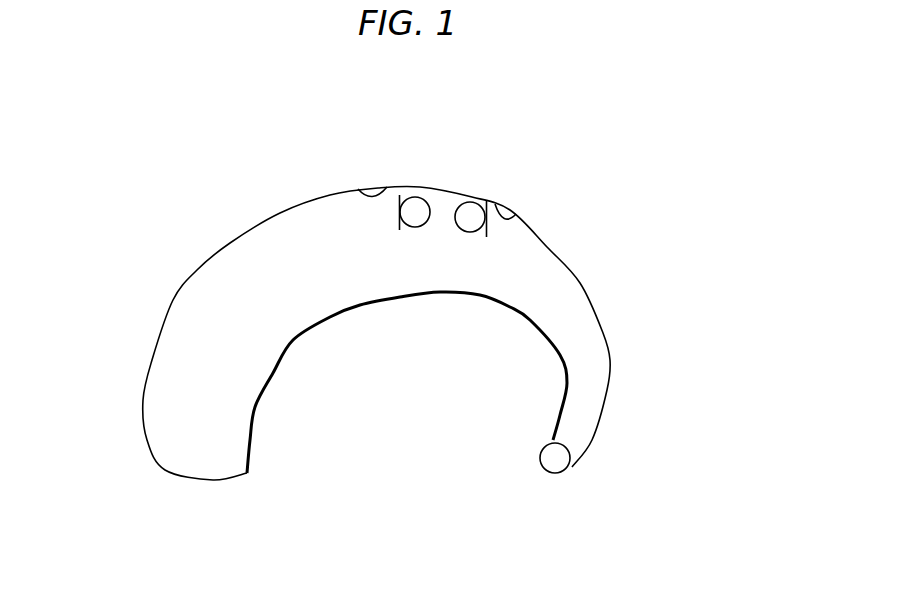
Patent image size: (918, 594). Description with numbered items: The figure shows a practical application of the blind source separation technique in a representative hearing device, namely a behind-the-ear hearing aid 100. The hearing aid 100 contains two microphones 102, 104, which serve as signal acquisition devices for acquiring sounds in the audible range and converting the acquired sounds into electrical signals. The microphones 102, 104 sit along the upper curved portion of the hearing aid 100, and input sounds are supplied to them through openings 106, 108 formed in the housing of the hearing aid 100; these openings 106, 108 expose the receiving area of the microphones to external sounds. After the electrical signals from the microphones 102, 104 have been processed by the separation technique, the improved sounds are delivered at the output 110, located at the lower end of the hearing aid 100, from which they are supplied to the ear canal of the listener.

The behind-the-ear hearing aid 100 is at (334, 385).
The microphone 102 is at (420, 187).
The microphone 104 is at (472, 197).
The opening 106 is at (507, 210).
The opening 108 is at (371, 183).
The output 110 is at (560, 467).